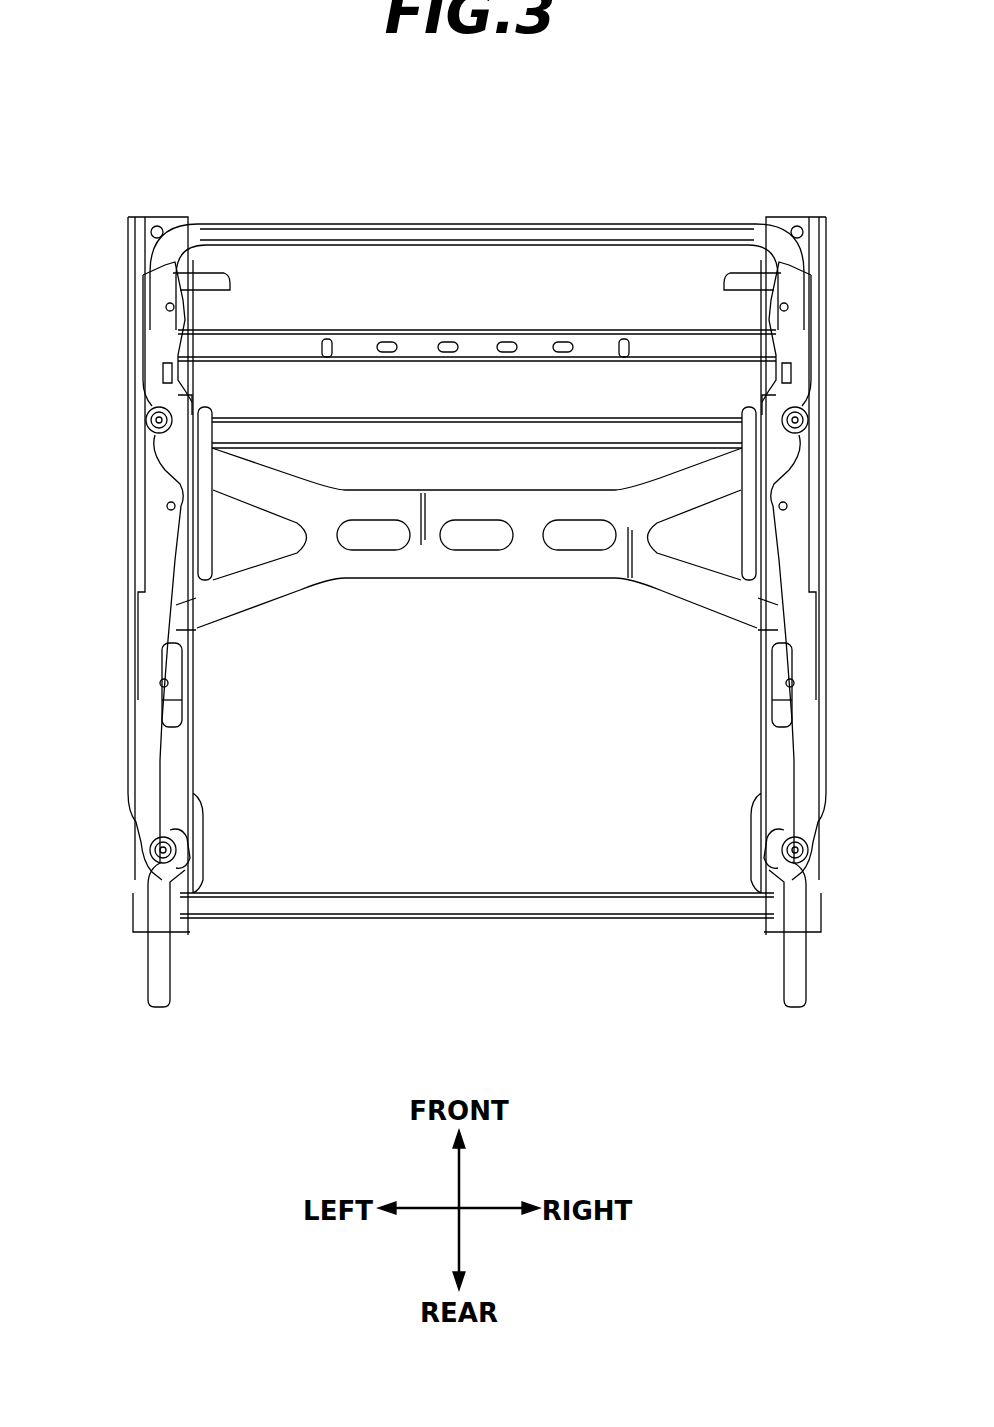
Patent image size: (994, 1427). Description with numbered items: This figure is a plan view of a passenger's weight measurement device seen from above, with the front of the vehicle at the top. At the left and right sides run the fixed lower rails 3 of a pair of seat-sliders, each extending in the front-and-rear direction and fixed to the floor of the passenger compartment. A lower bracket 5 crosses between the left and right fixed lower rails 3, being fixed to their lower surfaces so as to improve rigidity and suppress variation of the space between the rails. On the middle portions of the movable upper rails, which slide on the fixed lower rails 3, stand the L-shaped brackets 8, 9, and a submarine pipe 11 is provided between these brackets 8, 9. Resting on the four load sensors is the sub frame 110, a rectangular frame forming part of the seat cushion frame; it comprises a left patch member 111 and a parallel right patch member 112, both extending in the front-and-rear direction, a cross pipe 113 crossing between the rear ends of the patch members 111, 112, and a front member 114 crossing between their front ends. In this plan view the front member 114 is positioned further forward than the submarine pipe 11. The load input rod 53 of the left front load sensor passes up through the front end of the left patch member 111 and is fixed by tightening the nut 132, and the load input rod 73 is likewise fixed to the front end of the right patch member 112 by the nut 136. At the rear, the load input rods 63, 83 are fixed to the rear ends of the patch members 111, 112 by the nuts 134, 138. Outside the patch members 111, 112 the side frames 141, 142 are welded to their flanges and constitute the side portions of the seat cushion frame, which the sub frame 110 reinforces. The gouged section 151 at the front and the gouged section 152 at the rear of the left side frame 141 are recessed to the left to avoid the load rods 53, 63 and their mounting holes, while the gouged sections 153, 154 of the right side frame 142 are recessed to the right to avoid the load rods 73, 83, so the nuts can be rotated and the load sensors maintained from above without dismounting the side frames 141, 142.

The fixed lower rail 3 is at (158, 222).
The sub frame 110 is at (593, 328).
The front member 114 is at (430, 346).
The nut 132 is at (150, 412).
The nut 136 is at (804, 410).
The load input rod 53 is at (152, 424).
The load input rod 73 is at (803, 423).
The left patch member 111 is at (180, 752).
The right patch member 112 is at (778, 752).
The submarine pipe 11 is at (455, 418).
The bracket 8 is at (213, 533).
The bracket 9 is at (745, 533).
The lower bracket 5 is at (432, 572).
The side frame 141 is at (165, 553).
The side frame 142 is at (790, 553).
The gouged section 151 is at (192, 400).
The gouged section 153 is at (770, 400).
The nut 134 is at (150, 845).
The nut 138 is at (806, 842).
The load input rod 63 is at (152, 854).
The load input rod 83 is at (804, 854).
The gouged section 152 is at (176, 846).
The gouged section 154 is at (782, 846).
The cross pipe 113 is at (548, 908).